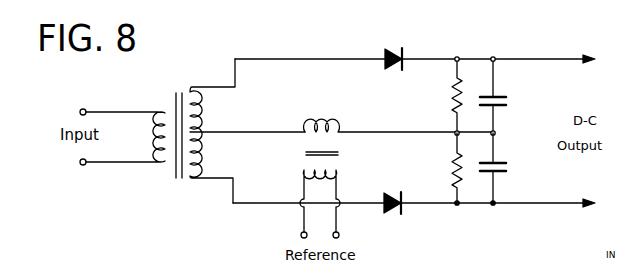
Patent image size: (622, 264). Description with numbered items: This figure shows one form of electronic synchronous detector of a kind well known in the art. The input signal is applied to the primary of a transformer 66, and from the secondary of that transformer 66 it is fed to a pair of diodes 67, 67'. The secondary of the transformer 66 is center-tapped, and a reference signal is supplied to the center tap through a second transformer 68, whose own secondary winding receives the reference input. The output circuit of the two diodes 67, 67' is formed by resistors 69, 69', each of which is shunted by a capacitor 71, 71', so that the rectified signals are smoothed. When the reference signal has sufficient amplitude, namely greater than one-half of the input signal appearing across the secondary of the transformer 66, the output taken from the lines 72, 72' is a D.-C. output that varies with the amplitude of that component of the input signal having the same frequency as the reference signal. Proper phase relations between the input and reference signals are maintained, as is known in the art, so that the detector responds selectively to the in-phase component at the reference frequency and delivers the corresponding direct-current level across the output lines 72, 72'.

The transformer 66 is at (190, 73).
The diode 67 is at (391, 42).
The diode 67' is at (381, 188).
The transformer 68 is at (325, 133).
The resistor 69 is at (434, 96).
The resistor 69' is at (433, 169).
The capacitor 71 is at (513, 96).
The capacitor 71' is at (514, 169).
The output line 72 is at (415, 44).
The output line 72' is at (414, 190).